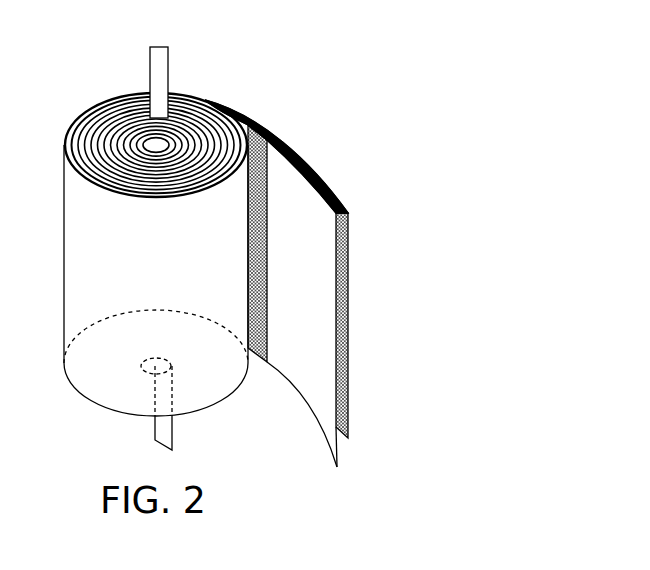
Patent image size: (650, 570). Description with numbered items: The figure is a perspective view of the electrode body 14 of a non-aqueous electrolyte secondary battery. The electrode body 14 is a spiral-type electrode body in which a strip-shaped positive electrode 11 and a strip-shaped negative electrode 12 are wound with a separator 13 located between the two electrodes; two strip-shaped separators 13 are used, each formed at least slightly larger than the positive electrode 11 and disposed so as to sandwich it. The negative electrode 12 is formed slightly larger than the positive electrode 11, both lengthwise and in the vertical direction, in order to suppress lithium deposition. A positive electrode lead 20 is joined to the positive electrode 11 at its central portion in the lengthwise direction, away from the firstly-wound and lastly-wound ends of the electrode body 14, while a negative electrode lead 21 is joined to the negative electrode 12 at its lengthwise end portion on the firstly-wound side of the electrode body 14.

The positive electrode 11 is at (264, 128).
The negative electrode 12 is at (337, 200).
The separator 13 is at (328, 306).
The electrode body 14 is at (399, 26).
The positive electrode lead 20 is at (160, 58).
The negative electrode lead 21 is at (155, 430).